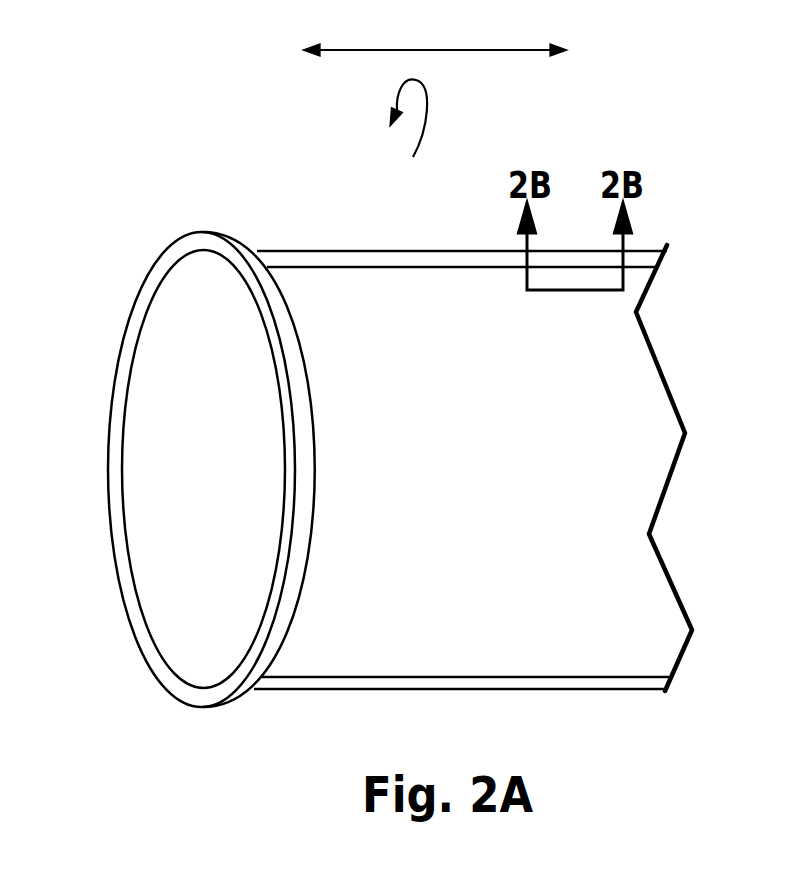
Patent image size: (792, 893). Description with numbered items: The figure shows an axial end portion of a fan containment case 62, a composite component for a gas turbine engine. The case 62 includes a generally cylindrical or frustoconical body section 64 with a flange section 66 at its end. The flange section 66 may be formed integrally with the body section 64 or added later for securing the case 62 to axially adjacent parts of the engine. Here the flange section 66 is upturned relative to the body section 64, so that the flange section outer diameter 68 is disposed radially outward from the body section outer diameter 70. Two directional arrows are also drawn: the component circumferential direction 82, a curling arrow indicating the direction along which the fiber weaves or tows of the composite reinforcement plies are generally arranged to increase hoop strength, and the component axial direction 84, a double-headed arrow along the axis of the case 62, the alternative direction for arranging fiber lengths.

The fan containment case 62 is at (680, 178).
The body section 64 is at (416, 220).
The flange section 66 is at (142, 229).
The flange section outer diameter 68 is at (223, 705).
The body section outer diameter 70 is at (490, 690).
The component circumferential direction 82 is at (423, 117).
The component axial direction 84 is at (410, 50).